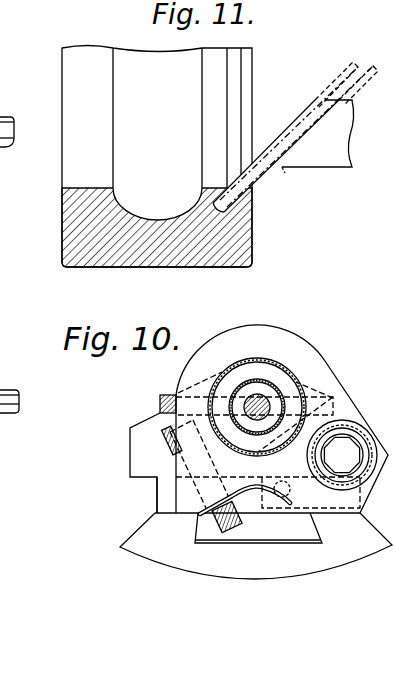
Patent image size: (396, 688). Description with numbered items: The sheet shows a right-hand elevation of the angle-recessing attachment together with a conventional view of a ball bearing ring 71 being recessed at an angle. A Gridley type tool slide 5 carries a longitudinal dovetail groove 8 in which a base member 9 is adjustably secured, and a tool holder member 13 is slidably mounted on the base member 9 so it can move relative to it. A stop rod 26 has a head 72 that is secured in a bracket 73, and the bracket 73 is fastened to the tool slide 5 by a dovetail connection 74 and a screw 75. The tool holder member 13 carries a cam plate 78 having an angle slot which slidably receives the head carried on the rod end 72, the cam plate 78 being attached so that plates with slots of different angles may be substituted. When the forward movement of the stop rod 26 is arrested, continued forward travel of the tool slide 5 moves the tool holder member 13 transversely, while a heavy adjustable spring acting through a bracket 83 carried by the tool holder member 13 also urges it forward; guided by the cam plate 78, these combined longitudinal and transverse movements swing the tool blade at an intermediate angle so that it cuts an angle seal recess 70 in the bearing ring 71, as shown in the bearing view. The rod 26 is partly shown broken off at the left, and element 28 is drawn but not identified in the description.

In FIG. 10, the tool slide 5 is at (207, 567).
In FIG. 10, the dovetail groove 8 is at (313, 532).
In FIG. 10, the base member 9 is at (157, 496).
In FIG. 10, the tool holder member 13 is at (130, 459).
In FIG. 10, the stop rod 26 is at (259, 396).
In FIG. 11, the sleeve 28 is at (7, 116).
In FIG. 11, the angle seal recess 70 is at (233, 201).
In FIG. 11, the bearing ring 71 is at (62, 231).
In FIG. 10, the head 72 is at (240, 382).
In FIG. 10, the bracket 73 is at (274, 331).
In FIG. 10, the dovetail connection 74 is at (199, 531).
In FIG. 10, the screw 75 is at (167, 434).
In FIG. 10, the cam plate 78 is at (169, 394).
In FIG. 10, the bracket 83 is at (306, 500).